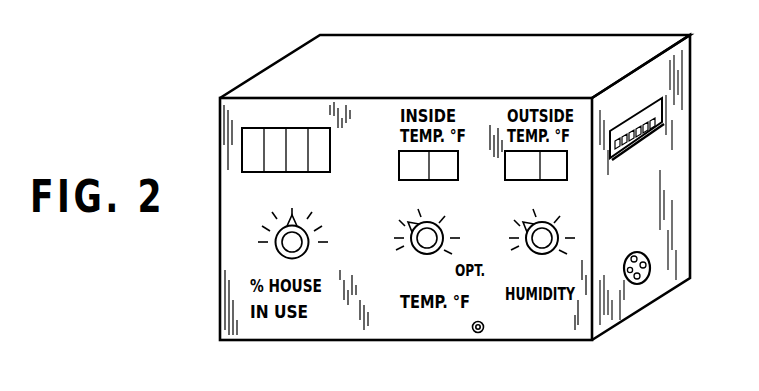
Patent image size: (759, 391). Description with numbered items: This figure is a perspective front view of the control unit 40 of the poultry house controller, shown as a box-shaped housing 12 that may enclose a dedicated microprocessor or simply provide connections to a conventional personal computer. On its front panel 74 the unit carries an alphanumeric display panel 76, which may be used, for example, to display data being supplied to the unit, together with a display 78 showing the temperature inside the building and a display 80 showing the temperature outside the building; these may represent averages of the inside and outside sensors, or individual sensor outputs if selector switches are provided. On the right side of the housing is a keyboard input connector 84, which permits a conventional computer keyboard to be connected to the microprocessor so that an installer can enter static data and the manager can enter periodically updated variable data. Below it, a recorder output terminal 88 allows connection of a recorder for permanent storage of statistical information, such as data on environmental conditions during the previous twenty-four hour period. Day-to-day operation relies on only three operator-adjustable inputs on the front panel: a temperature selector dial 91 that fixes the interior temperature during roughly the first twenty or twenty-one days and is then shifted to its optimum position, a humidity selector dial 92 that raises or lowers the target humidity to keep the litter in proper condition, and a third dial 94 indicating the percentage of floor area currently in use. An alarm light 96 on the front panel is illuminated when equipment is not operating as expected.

The housing 12 is at (538, 52).
The control unit 40 is at (643, 25).
The front panel 74 is at (235, 117).
The alphanumeric display panel 76 is at (290, 128).
The inside temperature display 78 is at (399, 155).
The outside temperature display 80 is at (567, 164).
The input connector 84 is at (645, 142).
The output terminal 88 is at (644, 283).
The temperature selector dial 91 is at (418, 252).
The humidity selector dial 92 is at (553, 252).
The third dial 94 is at (304, 254).
The alarm light 96 is at (478, 334).